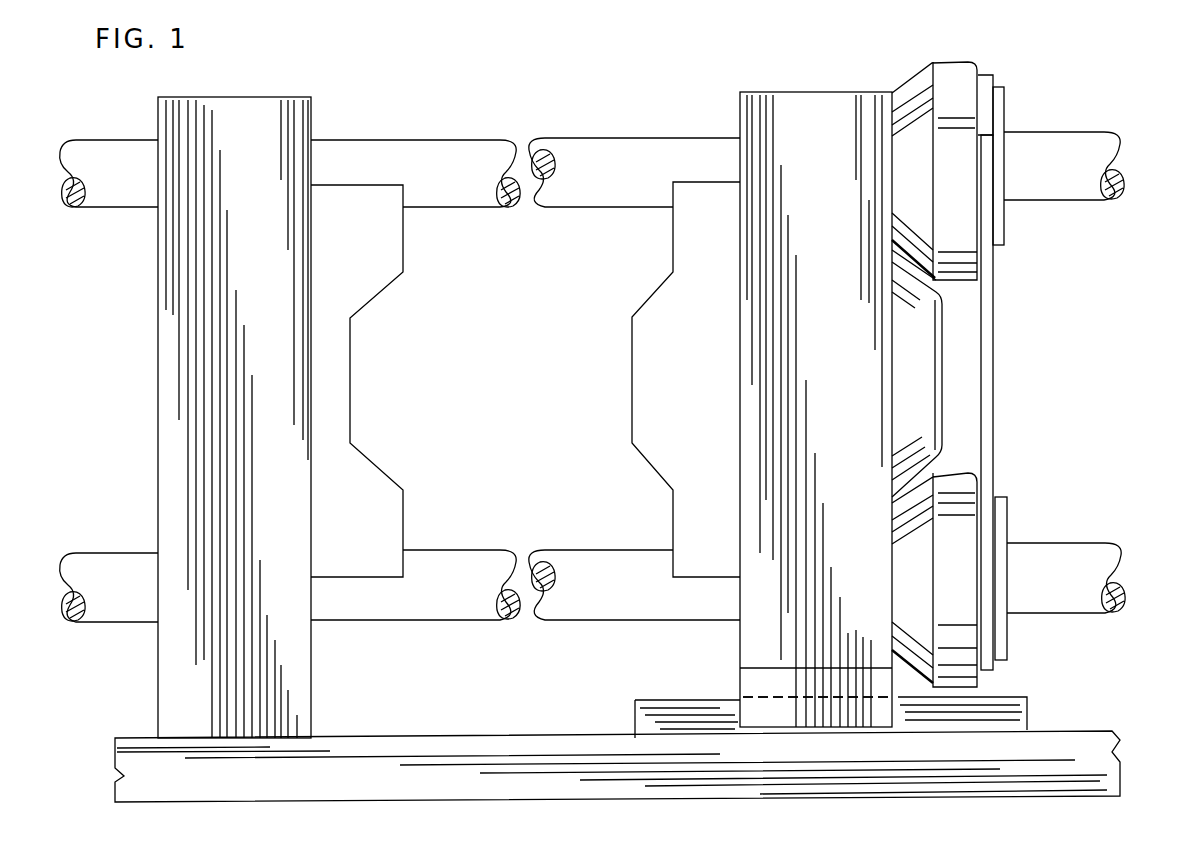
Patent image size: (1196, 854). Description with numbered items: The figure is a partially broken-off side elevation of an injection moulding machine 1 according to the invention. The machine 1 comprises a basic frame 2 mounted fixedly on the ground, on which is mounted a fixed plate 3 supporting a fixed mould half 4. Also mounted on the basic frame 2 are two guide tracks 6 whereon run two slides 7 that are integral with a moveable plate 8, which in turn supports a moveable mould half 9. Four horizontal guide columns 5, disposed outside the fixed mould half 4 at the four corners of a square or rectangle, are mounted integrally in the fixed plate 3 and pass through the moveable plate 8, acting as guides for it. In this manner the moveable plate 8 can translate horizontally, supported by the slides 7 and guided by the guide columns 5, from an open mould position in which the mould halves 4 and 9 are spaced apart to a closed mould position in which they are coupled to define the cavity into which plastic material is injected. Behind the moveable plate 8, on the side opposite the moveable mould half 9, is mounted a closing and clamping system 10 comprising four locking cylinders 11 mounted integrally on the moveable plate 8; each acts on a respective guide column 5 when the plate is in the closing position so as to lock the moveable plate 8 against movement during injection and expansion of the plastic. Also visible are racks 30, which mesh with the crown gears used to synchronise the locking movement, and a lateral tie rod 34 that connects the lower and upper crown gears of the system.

The injection moulding machine 1 is at (425, 76).
The basic frame 2 is at (410, 760).
The fixed plate 3 is at (180, 330).
The fixed mould half 4 is at (345, 357).
The guide column 5 is at (470, 165).
The guide track 6 is at (662, 708).
The slide 7 is at (770, 687).
The moveable plate 8 is at (816, 130).
The moveable mould half 9 is at (683, 333).
The closing and clamping system 10 is at (1047, 92).
The locking cylinder 11 is at (957, 118).
The rack 30 is at (1003, 213).
The lateral tie rod 34 is at (995, 380).